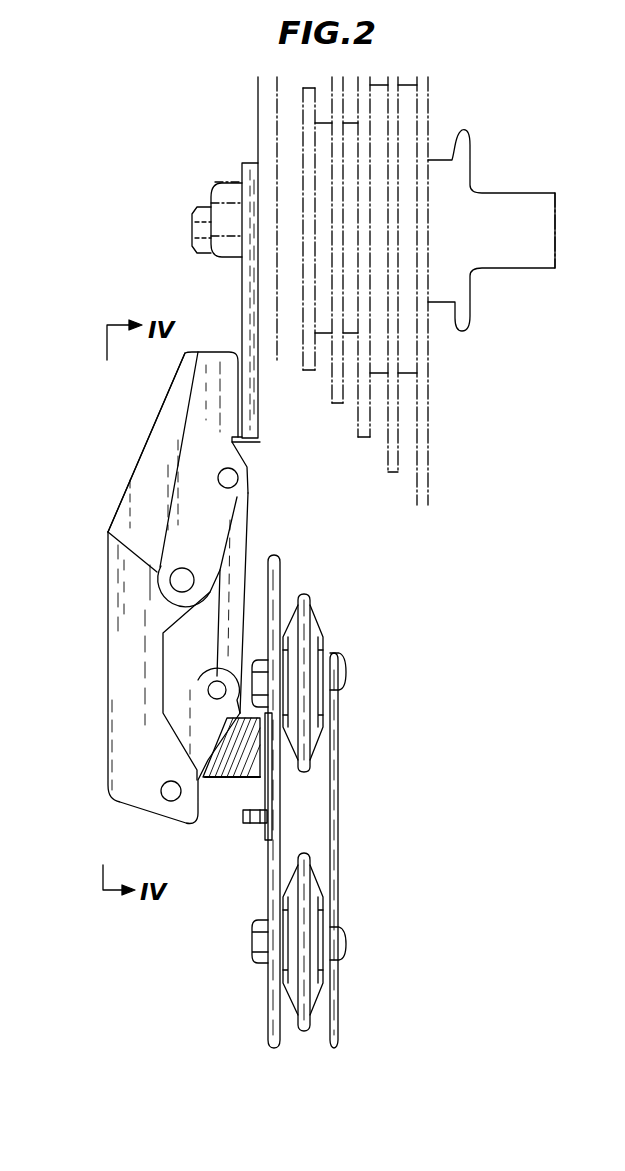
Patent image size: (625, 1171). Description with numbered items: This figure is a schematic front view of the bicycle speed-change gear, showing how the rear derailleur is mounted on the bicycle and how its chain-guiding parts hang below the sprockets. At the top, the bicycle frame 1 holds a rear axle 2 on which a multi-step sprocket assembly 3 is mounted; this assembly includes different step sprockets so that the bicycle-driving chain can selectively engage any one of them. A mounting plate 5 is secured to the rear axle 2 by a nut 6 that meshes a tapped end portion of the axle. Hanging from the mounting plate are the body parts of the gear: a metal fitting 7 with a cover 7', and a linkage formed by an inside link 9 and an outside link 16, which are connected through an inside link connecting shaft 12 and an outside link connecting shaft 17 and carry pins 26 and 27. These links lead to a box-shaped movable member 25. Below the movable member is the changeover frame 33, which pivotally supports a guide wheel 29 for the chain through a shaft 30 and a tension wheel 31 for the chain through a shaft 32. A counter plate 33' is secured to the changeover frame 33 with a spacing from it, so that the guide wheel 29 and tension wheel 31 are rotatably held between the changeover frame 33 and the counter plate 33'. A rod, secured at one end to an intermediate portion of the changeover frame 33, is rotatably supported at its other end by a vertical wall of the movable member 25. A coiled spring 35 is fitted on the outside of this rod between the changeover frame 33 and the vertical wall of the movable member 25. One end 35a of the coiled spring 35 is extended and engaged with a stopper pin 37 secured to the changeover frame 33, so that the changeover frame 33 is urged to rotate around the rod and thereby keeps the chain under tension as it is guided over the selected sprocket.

The bicycle frame 1 is at (258, 108).
The rear axle 2 is at (190, 218).
The multi-step sprocket assembly 3 is at (428, 450).
The mounting plate 5 is at (243, 305).
The nut 6 is at (223, 180).
The metal fitting 7 is at (161, 459).
The cover 7' is at (142, 442).
The inside link 9 is at (248, 540).
The inside link connecting shaft 12 is at (240, 480).
The outside link 16 is at (103, 640).
The outside link connecting shaft 17 is at (180, 581).
The movable member 25 is at (172, 722).
The pin 26 is at (215, 688).
The pin 27 is at (170, 790).
The guide wheel 29 is at (306, 600).
The shaft 30 is at (343, 672).
The tension wheel 31 is at (305, 860).
The shaft 32 is at (343, 942).
The changeover frame 33 is at (233, 801).
The counter plate 33' is at (374, 850).
The coiled spring 35 is at (220, 782).
The end of coiled spring 35a is at (260, 840).
The stopper pin 37 is at (240, 820).